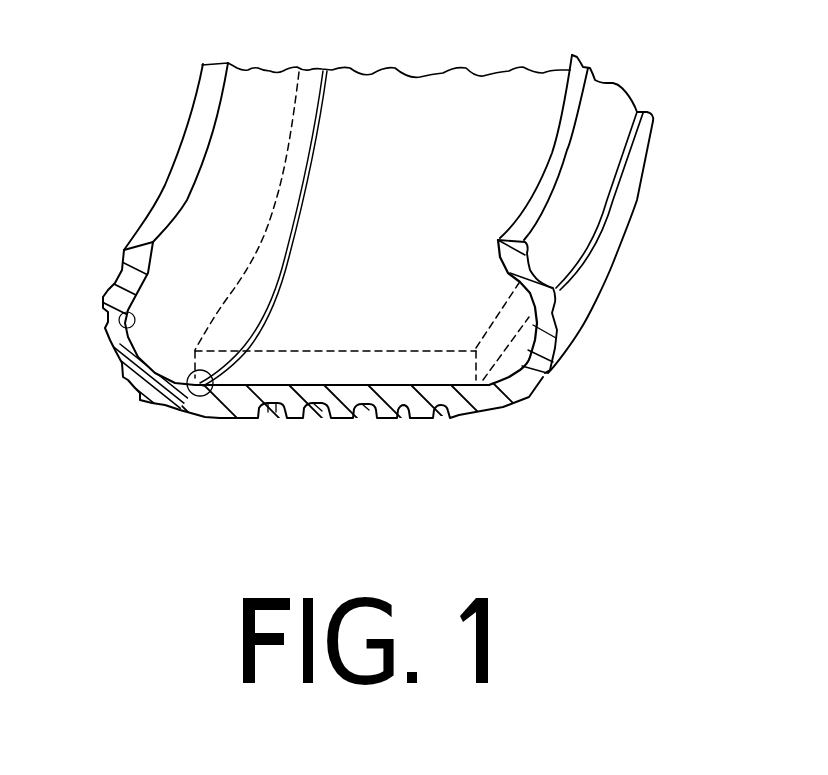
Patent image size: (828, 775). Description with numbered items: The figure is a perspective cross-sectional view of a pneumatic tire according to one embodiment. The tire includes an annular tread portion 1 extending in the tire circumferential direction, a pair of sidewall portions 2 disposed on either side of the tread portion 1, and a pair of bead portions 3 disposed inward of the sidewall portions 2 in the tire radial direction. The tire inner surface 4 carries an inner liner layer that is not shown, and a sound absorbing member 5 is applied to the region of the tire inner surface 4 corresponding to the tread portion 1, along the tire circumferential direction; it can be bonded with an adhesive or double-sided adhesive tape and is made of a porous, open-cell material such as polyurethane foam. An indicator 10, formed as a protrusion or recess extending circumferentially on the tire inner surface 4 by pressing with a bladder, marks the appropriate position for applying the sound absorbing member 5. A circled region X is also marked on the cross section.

The tread portion 1 is at (348, 420).
The sidewall portions 2 is at (107, 347).
The bead portions 3 is at (122, 265).
The tire inner surface 4 is at (118, 320).
The sound absorbing member 5 is at (426, 113).
The indicator 10 is at (309, 180).
The region X is at (201, 396).